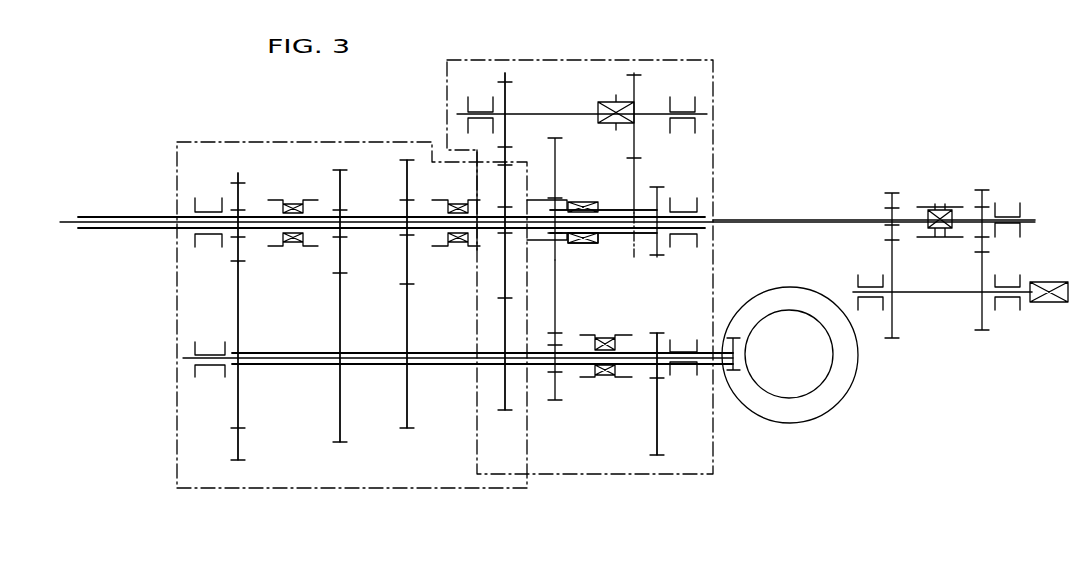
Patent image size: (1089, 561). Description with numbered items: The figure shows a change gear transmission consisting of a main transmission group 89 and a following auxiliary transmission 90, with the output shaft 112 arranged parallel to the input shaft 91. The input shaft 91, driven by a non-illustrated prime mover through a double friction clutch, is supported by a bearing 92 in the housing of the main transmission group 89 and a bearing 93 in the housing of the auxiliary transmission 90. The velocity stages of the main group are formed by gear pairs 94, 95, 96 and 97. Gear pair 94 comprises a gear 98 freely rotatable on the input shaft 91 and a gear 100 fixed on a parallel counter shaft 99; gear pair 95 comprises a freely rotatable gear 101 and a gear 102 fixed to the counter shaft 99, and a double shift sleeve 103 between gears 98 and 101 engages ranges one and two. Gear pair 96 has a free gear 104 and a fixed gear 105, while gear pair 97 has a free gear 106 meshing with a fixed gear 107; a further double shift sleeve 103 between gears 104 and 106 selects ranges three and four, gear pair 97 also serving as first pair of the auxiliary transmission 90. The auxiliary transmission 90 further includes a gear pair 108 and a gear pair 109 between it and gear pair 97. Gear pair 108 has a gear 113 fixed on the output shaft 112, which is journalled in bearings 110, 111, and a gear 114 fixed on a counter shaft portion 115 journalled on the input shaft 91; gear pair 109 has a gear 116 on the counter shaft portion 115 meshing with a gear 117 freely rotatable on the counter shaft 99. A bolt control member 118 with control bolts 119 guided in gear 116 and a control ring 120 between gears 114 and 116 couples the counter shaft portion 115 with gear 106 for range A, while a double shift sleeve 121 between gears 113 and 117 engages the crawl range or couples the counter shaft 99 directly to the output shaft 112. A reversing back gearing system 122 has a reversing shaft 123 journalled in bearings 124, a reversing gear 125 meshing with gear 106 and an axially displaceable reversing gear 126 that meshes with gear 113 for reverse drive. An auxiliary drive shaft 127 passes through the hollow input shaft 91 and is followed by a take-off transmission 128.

The main transmission group 89 is at (277, 140).
The auxiliary transmission 90 is at (540, 58).
The input shaft 91 is at (116, 216).
The bearing 92 is at (207, 197).
The bearing 93 is at (683, 197).
The gear pair 94 is at (237, 286).
The gear pair 95 is at (339, 295).
The gear pair 96 is at (405, 300).
The gear pair 97 is at (505, 279).
The gear 98 is at (238, 174).
The counter shaft 99 is at (283, 350).
The gear 100 is at (240, 430).
The gear 101 is at (338, 179).
The gear 102 is at (338, 437).
The double shift sleeve 103 is at (293, 204).
The gear 104 is at (405, 186).
The gear 105 is at (405, 428).
The gear 106 is at (477, 181).
The gear 107 is at (505, 410).
The gear pair 108 is at (650, 417).
The gear pair 109 is at (562, 269).
The bearing 110 is at (203, 378).
The bearing 111 is at (688, 377).
The output shaft 112 is at (660, 348).
The gear 113 is at (656, 472).
The gear 114 is at (657, 187).
The counter shaft portion 115 is at (612, 208).
The gear 116 is at (553, 164).
The gear 117 is at (555, 404).
The bolt control member 118 is at (568, 199).
The control bolts 119 is at (538, 244).
The control ring 120 is at (660, 255).
The double shift sleeve 121 is at (605, 378).
The reversing back gearing system 122 is at (572, 104).
The reversing shaft 123 is at (531, 113).
The bearings 124 is at (484, 97).
The reversing gear 125 is at (505, 72).
The reversing gear 126 is at (636, 72).
The auxiliary drive shaft 127 is at (795, 220).
The take-off transmission 128 is at (928, 200).